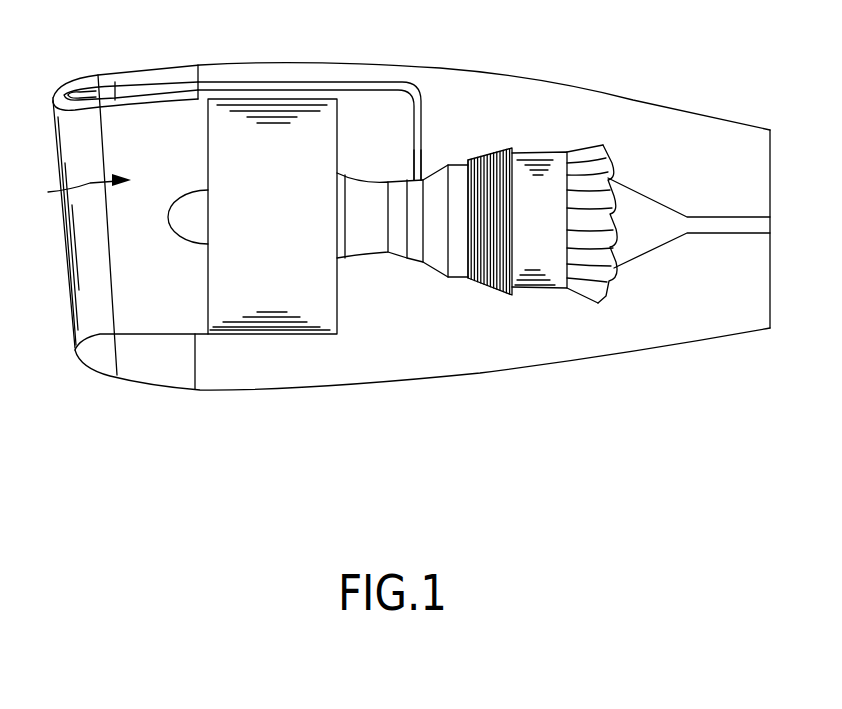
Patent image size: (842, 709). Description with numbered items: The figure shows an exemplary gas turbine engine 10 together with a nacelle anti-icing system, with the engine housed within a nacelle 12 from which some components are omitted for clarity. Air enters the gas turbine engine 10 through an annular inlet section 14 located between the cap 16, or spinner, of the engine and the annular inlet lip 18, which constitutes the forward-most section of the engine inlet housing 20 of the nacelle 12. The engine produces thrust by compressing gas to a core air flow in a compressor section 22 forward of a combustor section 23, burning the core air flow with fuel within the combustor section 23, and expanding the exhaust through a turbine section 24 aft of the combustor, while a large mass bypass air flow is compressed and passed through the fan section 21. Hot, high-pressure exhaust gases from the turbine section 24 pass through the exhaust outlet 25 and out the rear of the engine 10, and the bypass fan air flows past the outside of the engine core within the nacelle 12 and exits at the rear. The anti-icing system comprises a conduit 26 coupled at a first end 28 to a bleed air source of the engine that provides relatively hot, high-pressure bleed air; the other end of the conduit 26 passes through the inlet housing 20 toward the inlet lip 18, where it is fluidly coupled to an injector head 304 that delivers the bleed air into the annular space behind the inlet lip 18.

The gas turbine engine 10 is at (425, 52).
The nacelle 12 is at (580, 360).
The annular inlet section 14 is at (76, 189).
The cap 16 is at (187, 240).
The annular inlet lip 18 is at (82, 363).
The engine inlet housing 20 is at (144, 67).
The fan section 21 is at (243, 312).
The compressor section 22 is at (350, 291).
The combustor section 23 is at (417, 244).
The turbine section 24 is at (493, 311).
The exhaust outlet 25 is at (668, 242).
The conduit 26 is at (252, 85).
The first end 28 is at (423, 148).
The injector head 304 is at (88, 90).